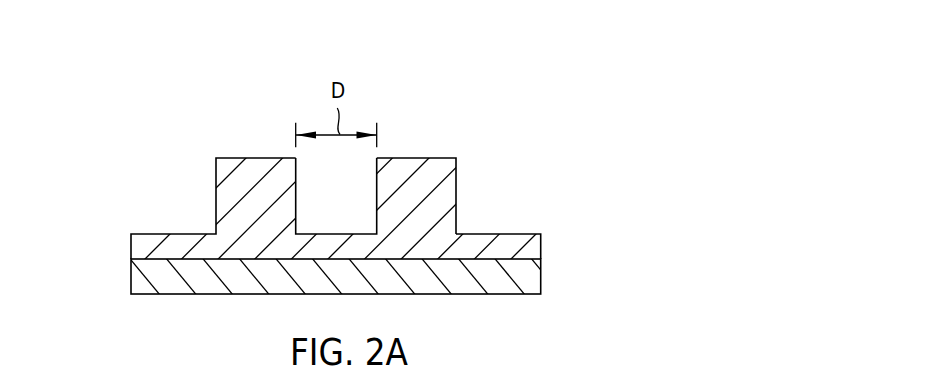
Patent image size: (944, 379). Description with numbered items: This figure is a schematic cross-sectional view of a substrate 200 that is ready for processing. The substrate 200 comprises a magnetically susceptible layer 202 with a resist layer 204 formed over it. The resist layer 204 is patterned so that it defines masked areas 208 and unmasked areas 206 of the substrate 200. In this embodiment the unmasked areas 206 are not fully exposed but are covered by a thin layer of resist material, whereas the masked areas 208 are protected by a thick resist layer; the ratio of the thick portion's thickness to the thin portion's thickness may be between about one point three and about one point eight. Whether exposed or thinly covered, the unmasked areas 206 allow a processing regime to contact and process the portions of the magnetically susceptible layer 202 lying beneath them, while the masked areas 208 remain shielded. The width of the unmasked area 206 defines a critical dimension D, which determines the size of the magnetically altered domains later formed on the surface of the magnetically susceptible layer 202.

The substrate 200 is at (167, 93).
The magnetically susceptible layer 202 is at (541, 277).
The resist layer 204 is at (541, 245).
The unmasked areas 206 is at (340, 233).
The masked areas 208 is at (428, 158).